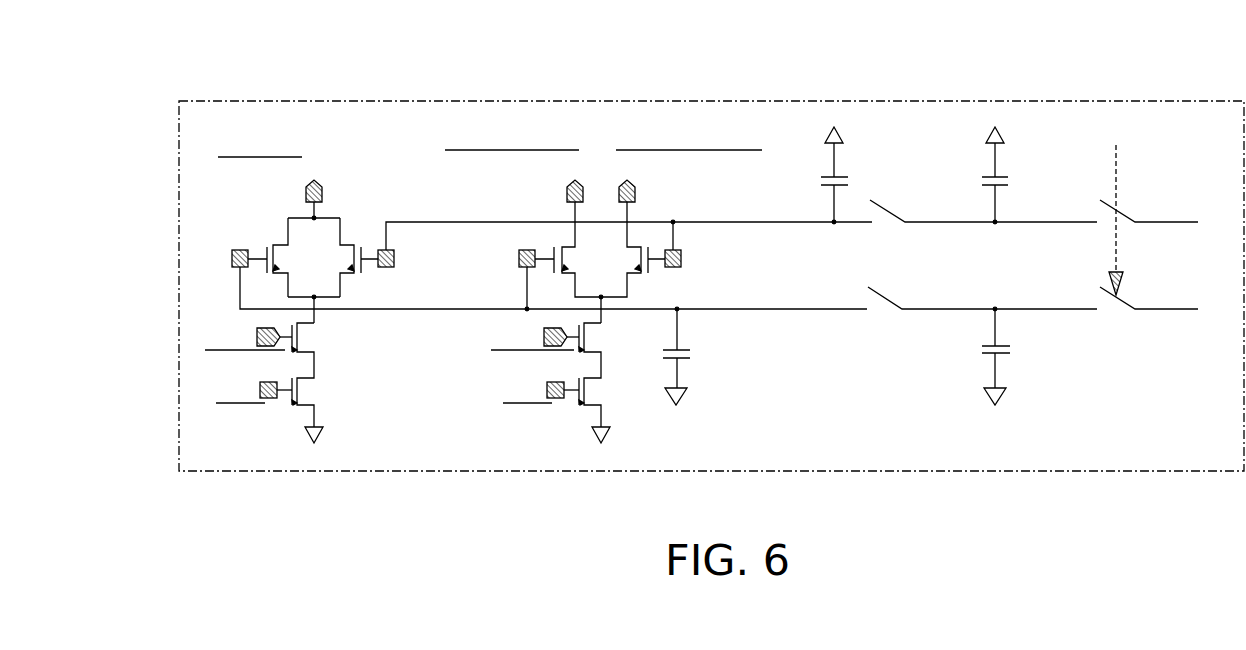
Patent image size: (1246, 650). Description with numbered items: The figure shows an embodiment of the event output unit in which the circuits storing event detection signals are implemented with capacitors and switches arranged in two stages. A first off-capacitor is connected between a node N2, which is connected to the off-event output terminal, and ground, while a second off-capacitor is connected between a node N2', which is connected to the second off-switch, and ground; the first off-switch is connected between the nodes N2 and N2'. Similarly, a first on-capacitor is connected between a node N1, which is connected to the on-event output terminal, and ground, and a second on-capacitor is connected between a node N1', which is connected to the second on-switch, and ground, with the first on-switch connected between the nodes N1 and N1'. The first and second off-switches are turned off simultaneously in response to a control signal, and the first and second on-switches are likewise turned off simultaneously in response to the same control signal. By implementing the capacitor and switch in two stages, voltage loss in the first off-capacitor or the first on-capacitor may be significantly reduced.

The node N1 is at (704, 339).
The node N2 is at (699, 219).
The node N1' is at (1001, 340).
The node N2' is at (990, 175).